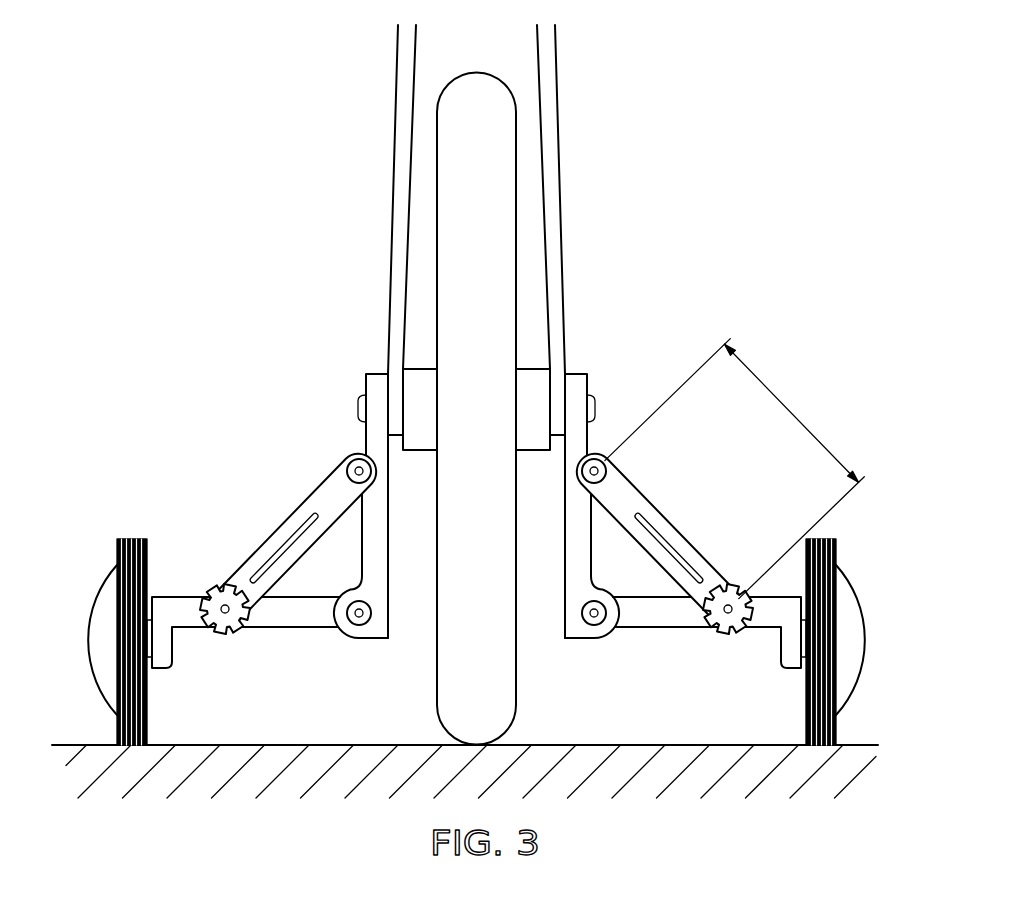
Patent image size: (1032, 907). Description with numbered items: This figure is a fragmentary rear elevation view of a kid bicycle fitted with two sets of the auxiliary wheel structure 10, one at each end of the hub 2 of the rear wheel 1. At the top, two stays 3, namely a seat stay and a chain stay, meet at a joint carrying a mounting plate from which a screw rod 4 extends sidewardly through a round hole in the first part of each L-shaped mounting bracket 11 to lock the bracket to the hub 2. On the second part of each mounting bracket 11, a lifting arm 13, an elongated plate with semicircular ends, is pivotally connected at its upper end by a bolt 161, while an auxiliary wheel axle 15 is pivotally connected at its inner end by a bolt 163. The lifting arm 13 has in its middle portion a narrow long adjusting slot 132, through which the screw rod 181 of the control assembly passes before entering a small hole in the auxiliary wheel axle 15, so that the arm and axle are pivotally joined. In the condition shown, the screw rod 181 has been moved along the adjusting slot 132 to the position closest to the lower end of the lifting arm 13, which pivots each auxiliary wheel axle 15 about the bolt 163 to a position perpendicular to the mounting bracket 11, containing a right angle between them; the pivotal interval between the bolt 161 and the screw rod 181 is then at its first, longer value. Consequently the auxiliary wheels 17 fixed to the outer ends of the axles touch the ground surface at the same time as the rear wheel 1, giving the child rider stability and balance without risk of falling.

The rear wheel 1 is at (490, 100).
The hub 2 is at (413, 397).
The stays 3 is at (566, 282).
The screw rod 4 is at (593, 393).
The auxiliary wheel structure 10 is at (718, 511).
The mounting bracket 11 is at (584, 542).
The lifting arm 13 is at (683, 540).
The auxiliary wheel axle 15 is at (627, 620).
The auxiliary wheel 17 is at (833, 548).
The adjusting slot 132 is at (597, 582).
The bolt 161 is at (608, 455).
The bolt 163 is at (593, 622).
The screw rod 181 is at (727, 618).